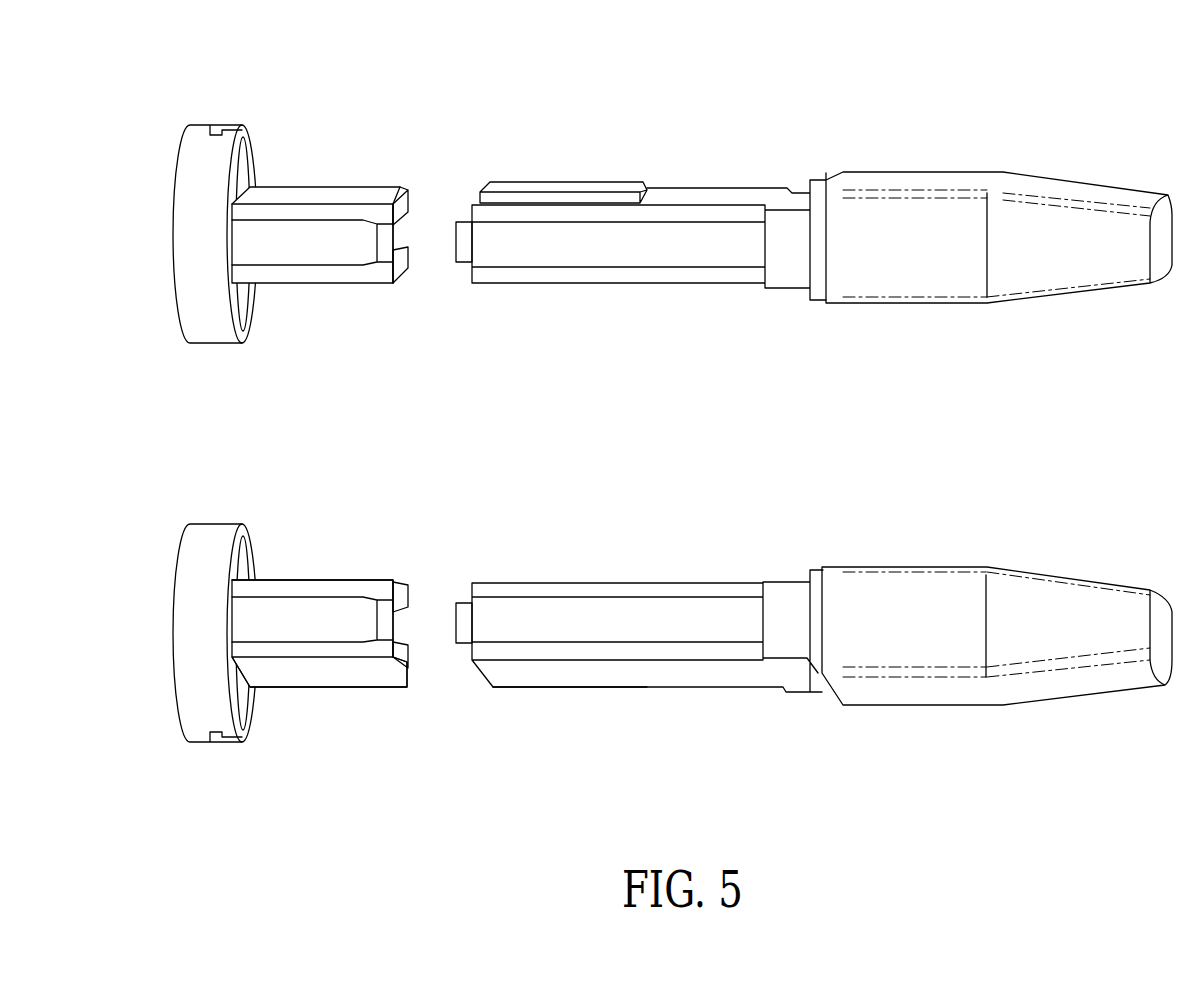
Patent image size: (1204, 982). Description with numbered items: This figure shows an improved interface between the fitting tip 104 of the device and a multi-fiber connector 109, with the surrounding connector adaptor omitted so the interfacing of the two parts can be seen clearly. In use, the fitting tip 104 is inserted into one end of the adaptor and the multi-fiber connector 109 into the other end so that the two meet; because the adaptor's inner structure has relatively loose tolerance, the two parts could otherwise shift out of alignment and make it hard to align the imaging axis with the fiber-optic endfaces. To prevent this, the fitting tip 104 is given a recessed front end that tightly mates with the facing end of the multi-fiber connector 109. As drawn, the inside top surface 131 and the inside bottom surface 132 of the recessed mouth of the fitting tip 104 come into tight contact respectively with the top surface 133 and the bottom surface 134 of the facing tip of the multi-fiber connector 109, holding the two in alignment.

The fitting tip 104 is at (300, 192).
The multi-fiber connector 109 is at (750, 193).
The inside top surface 131 is at (427, 220).
The inside bottom surface 132 is at (426, 258).
The top surface 133 is at (466, 217).
The bottom surface 134 is at (465, 275).